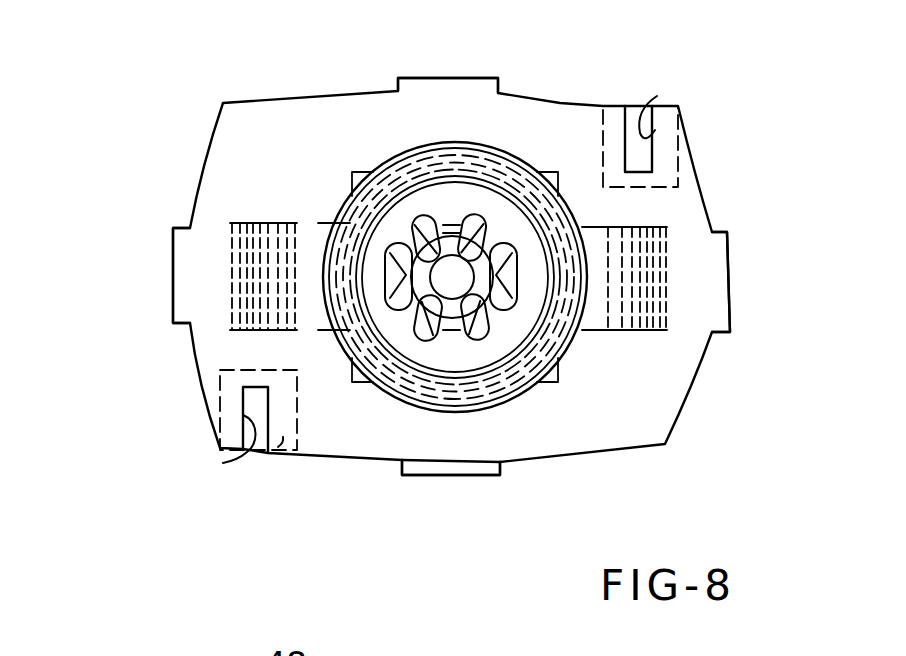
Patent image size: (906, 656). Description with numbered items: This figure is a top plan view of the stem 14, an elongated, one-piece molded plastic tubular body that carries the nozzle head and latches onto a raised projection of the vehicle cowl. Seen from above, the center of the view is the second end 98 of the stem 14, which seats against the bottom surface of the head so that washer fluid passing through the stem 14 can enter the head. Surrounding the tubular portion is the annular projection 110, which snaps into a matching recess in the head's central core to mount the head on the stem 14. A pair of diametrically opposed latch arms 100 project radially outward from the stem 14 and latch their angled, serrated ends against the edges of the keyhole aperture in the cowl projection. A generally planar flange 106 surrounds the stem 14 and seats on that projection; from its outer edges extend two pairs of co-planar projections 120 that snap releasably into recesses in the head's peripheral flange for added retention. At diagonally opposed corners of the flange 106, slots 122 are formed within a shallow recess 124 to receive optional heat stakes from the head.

The stem 14 is at (174, 98).
The second end 98 is at (447, 195).
The arms 100 is at (260, 225).
The flange 106 is at (375, 442).
The annular projection 110 is at (383, 160).
The projections 120 is at (462, 85).
The slots 122 is at (657, 96).
The shallow recess 124 is at (620, 102).